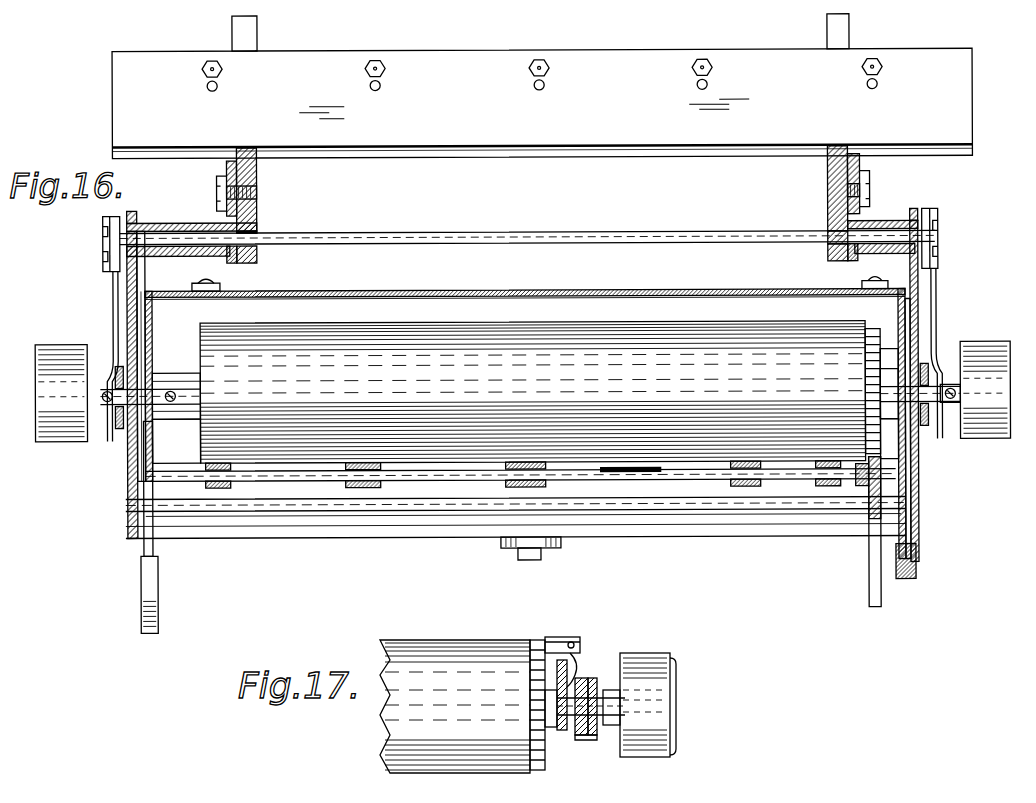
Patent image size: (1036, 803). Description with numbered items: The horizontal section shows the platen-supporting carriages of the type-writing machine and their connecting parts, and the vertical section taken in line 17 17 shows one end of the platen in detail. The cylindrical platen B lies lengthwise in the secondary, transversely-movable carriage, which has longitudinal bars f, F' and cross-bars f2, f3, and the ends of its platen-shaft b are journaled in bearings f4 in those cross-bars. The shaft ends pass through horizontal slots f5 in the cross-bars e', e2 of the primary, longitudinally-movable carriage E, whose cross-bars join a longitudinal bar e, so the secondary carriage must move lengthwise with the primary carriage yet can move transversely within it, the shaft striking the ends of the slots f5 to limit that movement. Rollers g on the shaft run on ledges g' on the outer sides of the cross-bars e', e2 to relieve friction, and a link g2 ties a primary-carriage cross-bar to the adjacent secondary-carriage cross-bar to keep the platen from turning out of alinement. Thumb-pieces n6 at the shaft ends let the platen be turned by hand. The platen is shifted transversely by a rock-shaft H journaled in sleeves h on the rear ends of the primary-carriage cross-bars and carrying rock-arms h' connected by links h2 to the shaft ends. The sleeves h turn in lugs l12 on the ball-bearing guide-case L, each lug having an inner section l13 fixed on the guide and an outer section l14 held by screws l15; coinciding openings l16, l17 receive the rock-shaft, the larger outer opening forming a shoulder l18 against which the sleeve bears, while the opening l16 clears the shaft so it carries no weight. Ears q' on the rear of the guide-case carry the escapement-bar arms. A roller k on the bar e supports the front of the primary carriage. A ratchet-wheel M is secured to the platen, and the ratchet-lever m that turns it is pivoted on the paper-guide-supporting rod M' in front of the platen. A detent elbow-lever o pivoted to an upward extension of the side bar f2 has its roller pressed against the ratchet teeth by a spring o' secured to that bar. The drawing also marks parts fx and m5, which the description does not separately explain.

In FIG. 16, the guide-case L is at (542, 103).
In FIG. 16, the ears q' is at (540, 32).
In FIG. 16, the inner lug-section l13 is at (250, 150).
In FIG. 16, the outer lug-section l14 is at (864, 132).
In FIG. 16, the screws l15 is at (257, 192).
In FIG. 16, the circular opening of inner section l16 is at (257, 228).
In FIG. 16, the circular opening of outer section l17 is at (872, 270).
In FIG. 16, the shoulder l18 is at (257, 257).
In FIG. 16, the lugs l12 is at (540, 274).
In FIG. 16, the bearing-sleeves h is at (522, 227).
In FIG. 16, the rock-shaft H is at (527, 222).
In FIG. 16, the rock-arms h' is at (522, 241).
In FIG. 16, the links h2 is at (112, 318).
In FIG. 16, the frame top fx is at (528, 270).
In FIG. 16, the horizontal slots f5 is at (140, 370).
In FIG. 16, the bearings f4 is at (152, 394).
In FIG. 16, the cross-bar f3 is at (152, 440).
In FIG. 16, the cross-bar f2 is at (880, 427).
In FIG. 17, the cross-bar f2 is at (551, 728).
In FIG. 16, the platen B is at (533, 392).
In FIG. 17, the platen B is at (455, 706).
In FIG. 16, the ratchet-wheel M is at (851, 391).
In FIG. 17, the ratchet-wheel M is at (531, 721).
In FIG. 16, the section line 17 is at (565, 392).
In FIG. 17, the section line 17 is at (591, 706).
In FIG. 16, the thumb-pieces n6 is at (522, 391).
In FIG. 17, the thumb-pieces n6 is at (663, 705).
In FIG. 16, the rollers g is at (525, 413).
In FIG. 17, the rollers g is at (598, 695).
In FIG. 16, the ledges or tracks g' is at (528, 437).
In FIG. 17, the ledges or tracks g' is at (598, 758).
In FIG. 16, the platen-shaft b is at (965, 444).
In FIG. 17, the platen-shaft b is at (612, 708).
In FIG. 16, the longitudinal bar F' is at (521, 481).
In FIG. 16, the longitudinal bar e is at (516, 532).
In FIG. 16, the longitudinal bar f is at (290, 513).
In FIG. 16, the cross-bar e2 is at (130, 508).
In FIG. 16, the cross-bar e' is at (930, 428).
In FIG. 17, the cross-bar e' is at (576, 723).
In FIG. 16, the primary carriage E is at (127, 537).
In FIG. 16, the roller k is at (532, 556).
In FIG. 16, the paper-guide-supporting rod M' is at (631, 516).
In FIG. 16, the ratchet-lever m is at (868, 482).
In FIG. 16, the rod m5 is at (868, 598).
In FIG. 16, the link g2 is at (915, 575).
In FIG. 17, the elbow-lever o is at (566, 629).
In FIG. 17, the spring o' is at (590, 662).